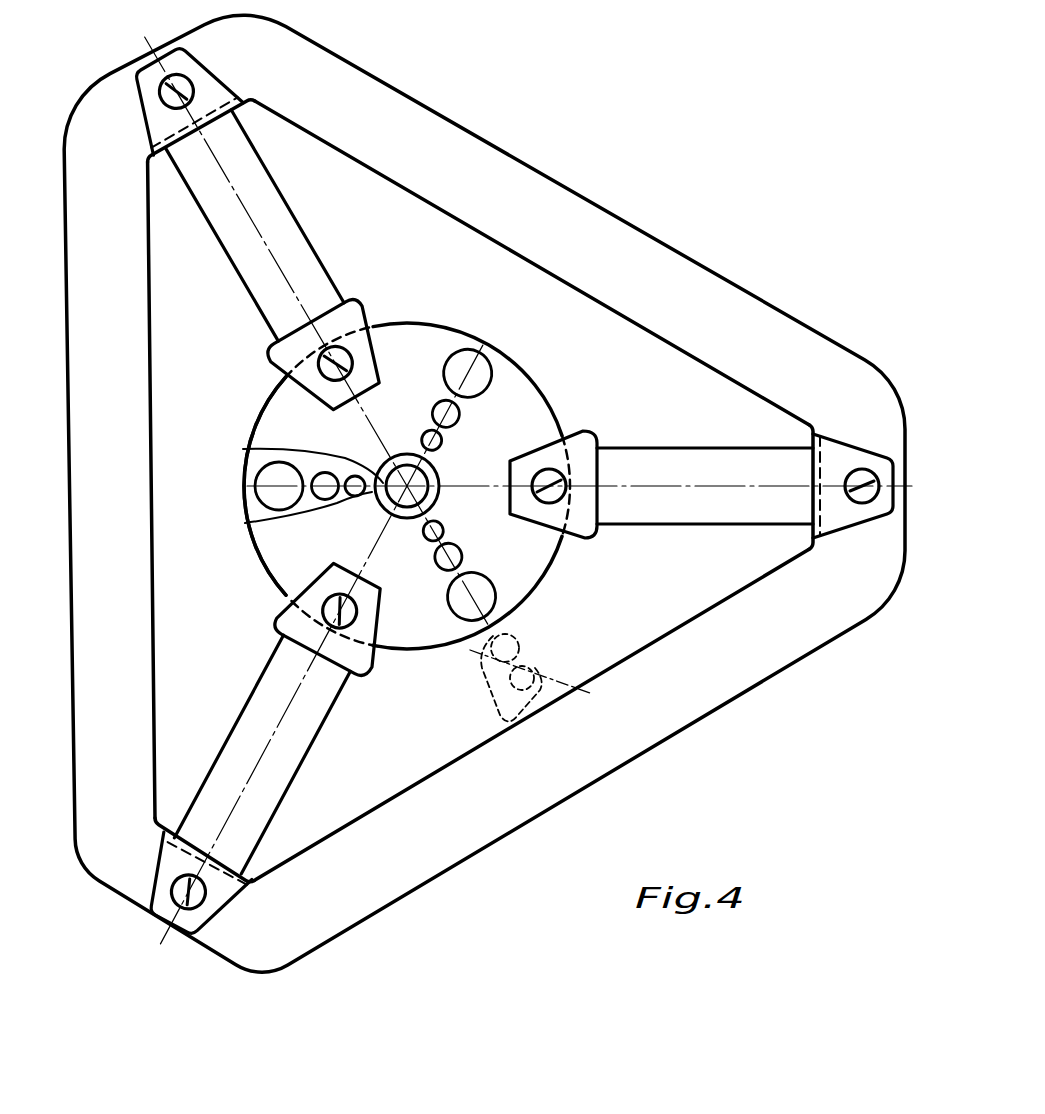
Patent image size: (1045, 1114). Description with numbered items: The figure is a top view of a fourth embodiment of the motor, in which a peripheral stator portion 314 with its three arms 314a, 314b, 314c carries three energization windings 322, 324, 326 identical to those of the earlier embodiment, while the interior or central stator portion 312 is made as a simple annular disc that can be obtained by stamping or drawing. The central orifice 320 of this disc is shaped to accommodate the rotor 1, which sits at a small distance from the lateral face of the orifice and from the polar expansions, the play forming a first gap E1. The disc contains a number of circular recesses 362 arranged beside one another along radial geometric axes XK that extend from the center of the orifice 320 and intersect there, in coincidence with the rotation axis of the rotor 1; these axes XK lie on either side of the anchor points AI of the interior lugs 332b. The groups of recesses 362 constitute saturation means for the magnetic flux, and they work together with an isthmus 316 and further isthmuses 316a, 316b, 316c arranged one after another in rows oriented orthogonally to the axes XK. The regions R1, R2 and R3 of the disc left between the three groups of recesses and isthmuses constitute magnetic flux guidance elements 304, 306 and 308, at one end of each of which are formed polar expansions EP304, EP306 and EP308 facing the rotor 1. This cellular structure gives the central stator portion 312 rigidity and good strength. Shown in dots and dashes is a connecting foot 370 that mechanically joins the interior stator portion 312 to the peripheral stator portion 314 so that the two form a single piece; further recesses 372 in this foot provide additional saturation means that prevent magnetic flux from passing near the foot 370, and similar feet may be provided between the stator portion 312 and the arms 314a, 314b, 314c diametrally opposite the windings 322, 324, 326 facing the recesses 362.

The rotor 1 is at (408, 518).
The magnetic flux guidance element 304 is at (442, 620).
The magnetic flux guidance element 306 is at (267, 422).
The magnetic flux guidance element 308 is at (532, 407).
The central stator portion 312 is at (474, 363).
The peripheral stator portion 314 is at (466, 832).
The arm of the peripheral stator portion 314a is at (602, 765).
The arm of the peripheral stator portion 314b is at (135, 490).
The arm of the peripheral stator portion 314c is at (570, 227).
The isthmus 316 is at (243, 448).
The isthmus 316a is at (347, 497).
The isthmus 316b is at (245, 523).
The isthmus 316c is at (245, 486).
The central orifice 320 is at (405, 453).
The energization winding 322 is at (316, 758).
The energization winding 324 is at (313, 226).
The energization winding 326 is at (645, 444).
The interior lug 332b is at (283, 352).
The recess 362 is at (494, 598).
The connecting foot 370 is at (542, 670).
The recess 372 is at (505, 718).
The anchor point AI is at (364, 338).
The geometric axis XK is at (518, 347).
The first gap E1 is at (437, 507).
The region of the annular disc R1 is at (300, 562).
The region of the annular disc R2 is at (297, 432).
The region of the annular disc R3 is at (492, 408).
The polar expansion EP304 is at (383, 507).
The polar expansion EP306 is at (383, 468).
The polar expansion EP308 is at (438, 477).